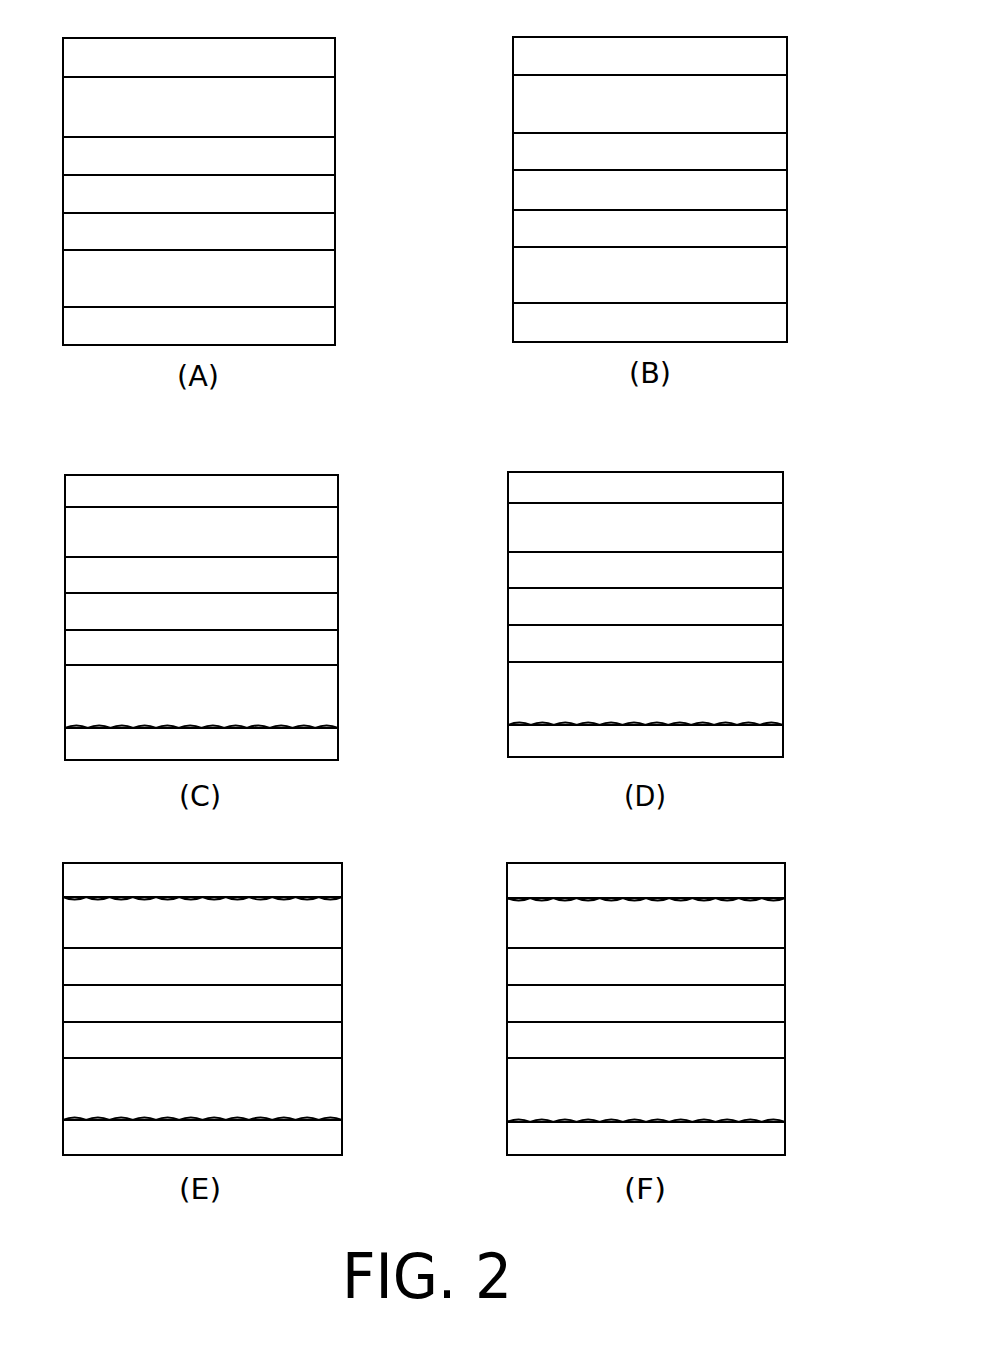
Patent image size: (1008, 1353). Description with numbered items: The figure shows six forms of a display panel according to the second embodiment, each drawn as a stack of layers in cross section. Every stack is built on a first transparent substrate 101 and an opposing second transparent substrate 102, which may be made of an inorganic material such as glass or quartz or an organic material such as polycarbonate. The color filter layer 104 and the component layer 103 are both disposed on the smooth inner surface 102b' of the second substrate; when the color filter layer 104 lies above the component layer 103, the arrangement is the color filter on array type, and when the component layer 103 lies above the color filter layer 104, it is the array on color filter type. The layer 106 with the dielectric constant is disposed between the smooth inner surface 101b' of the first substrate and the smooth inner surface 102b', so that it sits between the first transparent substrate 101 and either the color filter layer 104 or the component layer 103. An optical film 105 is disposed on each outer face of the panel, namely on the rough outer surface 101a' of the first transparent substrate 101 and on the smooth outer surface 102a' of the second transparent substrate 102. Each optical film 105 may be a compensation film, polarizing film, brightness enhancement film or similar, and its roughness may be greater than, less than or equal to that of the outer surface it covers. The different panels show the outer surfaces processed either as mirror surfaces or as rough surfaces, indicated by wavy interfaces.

The first transparent substrate 101 is at (425, 511).
The second transparent substrate 102 is at (425, 684).
The component layer 103 is at (425, 614).
The color filter layer 104 is at (425, 616).
The optical film 105 is at (425, 596).
The layer with the dielectric constant 106 is at (425, 558).
The rough outer surface 101a' is at (477, 465).
The smooth inner surface 101b' is at (474, 554).
The smooth outer surface 102a' is at (479, 730).
The smooth inner surface 102b' is at (478, 634).